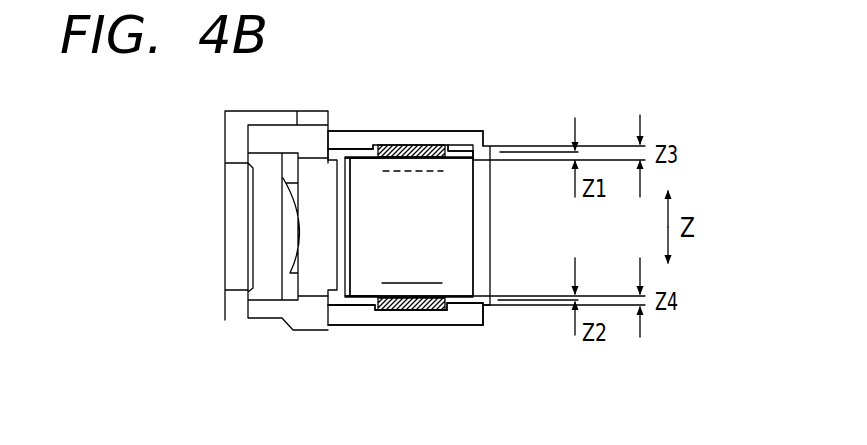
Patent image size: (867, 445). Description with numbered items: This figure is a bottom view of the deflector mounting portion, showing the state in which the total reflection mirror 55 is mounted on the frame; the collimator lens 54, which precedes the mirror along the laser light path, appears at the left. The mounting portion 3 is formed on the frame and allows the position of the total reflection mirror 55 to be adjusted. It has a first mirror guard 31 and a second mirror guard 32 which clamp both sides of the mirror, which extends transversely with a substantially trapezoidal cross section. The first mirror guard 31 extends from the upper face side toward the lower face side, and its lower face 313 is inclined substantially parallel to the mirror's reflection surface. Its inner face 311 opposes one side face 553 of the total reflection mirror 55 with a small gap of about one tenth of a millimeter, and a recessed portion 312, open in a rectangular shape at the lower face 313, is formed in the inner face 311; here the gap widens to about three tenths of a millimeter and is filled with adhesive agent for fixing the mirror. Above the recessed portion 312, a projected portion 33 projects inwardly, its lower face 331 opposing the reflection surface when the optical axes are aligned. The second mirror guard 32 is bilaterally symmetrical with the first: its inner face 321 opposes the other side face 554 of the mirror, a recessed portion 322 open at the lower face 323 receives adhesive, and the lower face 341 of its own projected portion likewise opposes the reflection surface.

The mounting portion 3 is at (471, 219).
The first mirror guard 31 is at (419, 129).
The inner face 311 is at (480, 131).
The recessed portion 312 is at (382, 131).
The lower face 313 is at (457, 131).
The second mirror guard 32 is at (420, 327).
The inner face 321 is at (473, 325).
The recessed portion 322 is at (393, 325).
The lower face 323 is at (455, 325).
The projected portion 33 is at (395, 145).
The lower face 331 is at (417, 88).
The lower face 341 is at (382, 369).
The collimator lens 54 is at (260, 258).
The total reflection mirror 55 is at (452, 235).
The side face 553 is at (350, 131).
The side face 554 is at (335, 323).